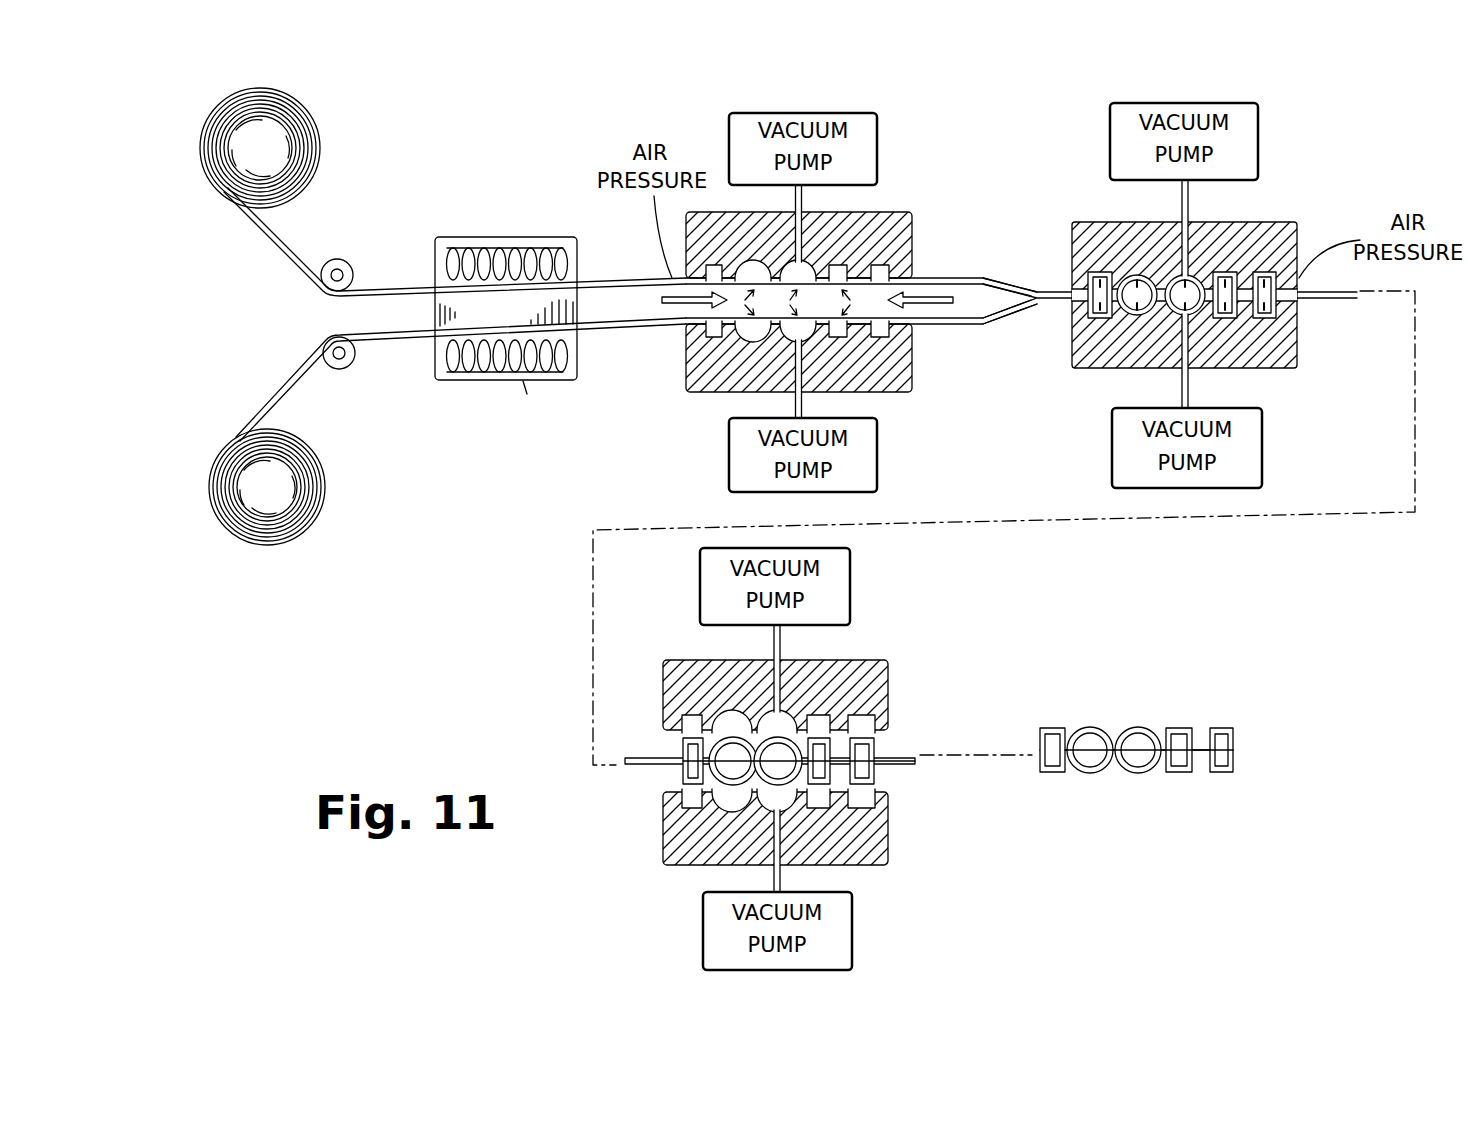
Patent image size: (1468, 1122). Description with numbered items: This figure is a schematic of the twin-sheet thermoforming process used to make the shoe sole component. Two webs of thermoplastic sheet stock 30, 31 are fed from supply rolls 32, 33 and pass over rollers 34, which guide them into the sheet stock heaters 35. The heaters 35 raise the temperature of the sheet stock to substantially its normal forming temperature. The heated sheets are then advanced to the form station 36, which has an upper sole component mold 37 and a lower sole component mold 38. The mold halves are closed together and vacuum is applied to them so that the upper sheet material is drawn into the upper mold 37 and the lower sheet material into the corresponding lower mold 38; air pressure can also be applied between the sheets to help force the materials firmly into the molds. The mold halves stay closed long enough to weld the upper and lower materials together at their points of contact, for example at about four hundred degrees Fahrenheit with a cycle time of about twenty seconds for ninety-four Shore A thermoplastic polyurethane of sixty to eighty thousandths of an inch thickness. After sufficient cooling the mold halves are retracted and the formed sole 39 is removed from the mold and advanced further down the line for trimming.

The thermoplastic sheet stock 30 is at (278, 253).
The thermoplastic sheet stock 31 is at (275, 392).
The roll 32 is at (212, 176).
The roll 33 is at (230, 527).
The rollers 34 is at (342, 258).
The sheet stock heater 35 is at (488, 236).
The form station 36 is at (990, 519).
The upper sole component mold 37 is at (914, 213).
The lower sole component mold 38 is at (716, 393).
The formed sole 39 is at (876, 745).